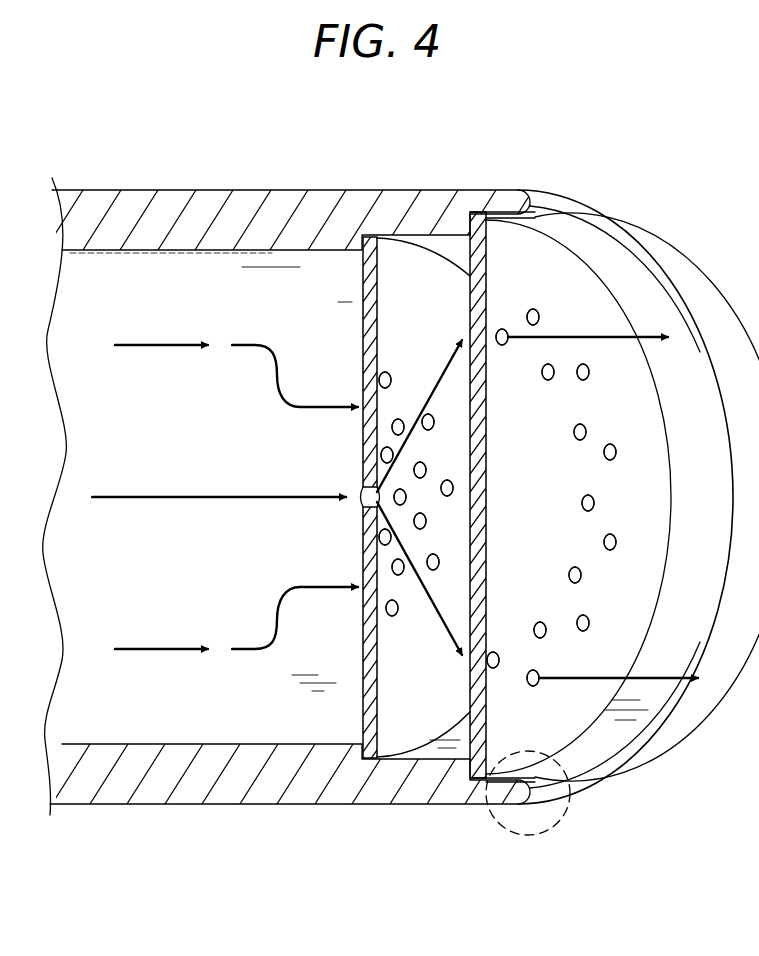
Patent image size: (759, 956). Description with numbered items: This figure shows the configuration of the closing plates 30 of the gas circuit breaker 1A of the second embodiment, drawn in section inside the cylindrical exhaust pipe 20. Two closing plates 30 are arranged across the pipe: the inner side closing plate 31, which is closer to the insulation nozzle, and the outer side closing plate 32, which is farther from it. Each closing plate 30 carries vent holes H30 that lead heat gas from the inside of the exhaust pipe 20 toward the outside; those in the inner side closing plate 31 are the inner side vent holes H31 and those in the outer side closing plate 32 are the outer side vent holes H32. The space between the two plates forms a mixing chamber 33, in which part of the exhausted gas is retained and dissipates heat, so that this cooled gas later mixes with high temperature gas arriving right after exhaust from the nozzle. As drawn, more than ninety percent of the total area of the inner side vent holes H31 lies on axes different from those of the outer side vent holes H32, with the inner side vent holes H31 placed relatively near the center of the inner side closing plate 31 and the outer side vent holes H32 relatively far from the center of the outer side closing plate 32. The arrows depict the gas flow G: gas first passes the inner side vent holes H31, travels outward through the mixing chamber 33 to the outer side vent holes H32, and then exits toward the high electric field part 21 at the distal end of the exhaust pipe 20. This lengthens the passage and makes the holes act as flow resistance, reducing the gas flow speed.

The gas circuit breaker 1A is at (106, 131).
The exhaust pipe 20 is at (198, 218).
The high electric field part 21 is at (565, 818).
The closing plate 30 is at (508, 133).
The inner side closing plate 31 is at (447, 290).
The outer side closing plate 32 is at (517, 262).
The mixing chamber 33 is at (422, 749).
The vent hole H30 is at (400, 133).
The inner side vent hole H31 is at (385, 380).
The outer side vent hole H32 is at (527, 318).
The measurement gas flow G is at (148, 497).